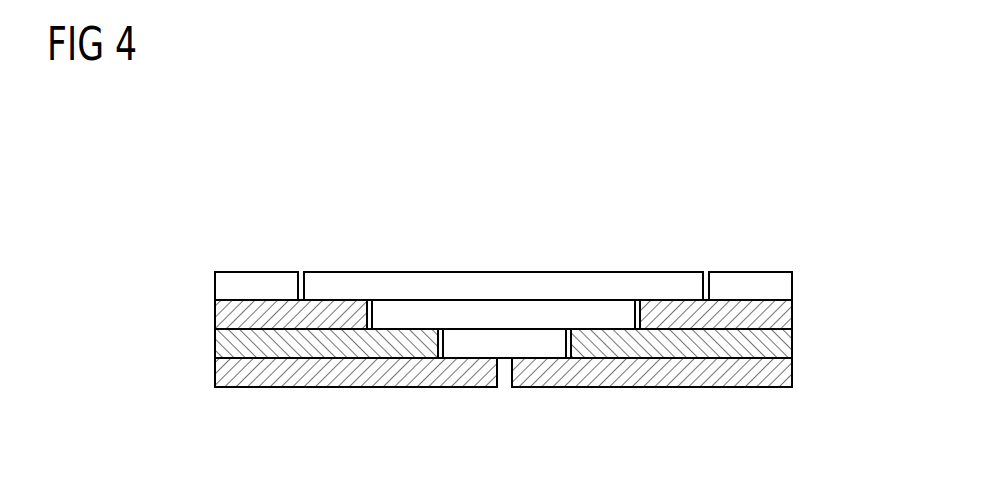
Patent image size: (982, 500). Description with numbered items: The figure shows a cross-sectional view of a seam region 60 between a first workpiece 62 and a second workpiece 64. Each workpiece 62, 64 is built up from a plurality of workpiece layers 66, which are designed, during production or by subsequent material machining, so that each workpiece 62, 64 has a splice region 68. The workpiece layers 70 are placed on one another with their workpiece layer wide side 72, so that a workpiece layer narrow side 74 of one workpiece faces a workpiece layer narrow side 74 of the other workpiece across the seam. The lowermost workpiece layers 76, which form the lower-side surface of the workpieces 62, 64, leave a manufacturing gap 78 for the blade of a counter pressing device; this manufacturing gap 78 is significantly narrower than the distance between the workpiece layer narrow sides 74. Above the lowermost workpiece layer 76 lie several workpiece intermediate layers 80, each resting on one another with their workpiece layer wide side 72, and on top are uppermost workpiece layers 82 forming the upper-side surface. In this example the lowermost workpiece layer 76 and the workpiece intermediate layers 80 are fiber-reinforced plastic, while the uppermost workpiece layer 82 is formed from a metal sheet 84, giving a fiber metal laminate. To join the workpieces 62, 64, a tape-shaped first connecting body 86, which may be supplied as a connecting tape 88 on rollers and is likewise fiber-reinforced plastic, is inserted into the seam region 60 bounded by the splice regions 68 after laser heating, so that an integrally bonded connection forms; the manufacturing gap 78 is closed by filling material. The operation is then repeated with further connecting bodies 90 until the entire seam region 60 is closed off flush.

The seam region 60 is at (143, 161).
The first workpiece 62 is at (218, 428).
The second workpiece 64 is at (667, 412).
The workpiece layers 66 is at (150, 270).
The splice region 68 is at (353, 252).
The workpiece layers 70 is at (215, 373).
The workpiece layer wide side 72 is at (266, 330).
The workpiece layer narrow side 74 is at (298, 290).
The lowermost workpiece layer 76 is at (347, 375).
The manufacturing gap 78 is at (511, 404).
The workpiece intermediate layers 80 is at (215, 346).
The uppermost workpiece layer 82 is at (215, 285).
The metal sheet 84 is at (247, 285).
The first connecting body 86 is at (446, 340).
The connecting tape 88 is at (525, 285).
The further connecting bodies 90 is at (498, 315).